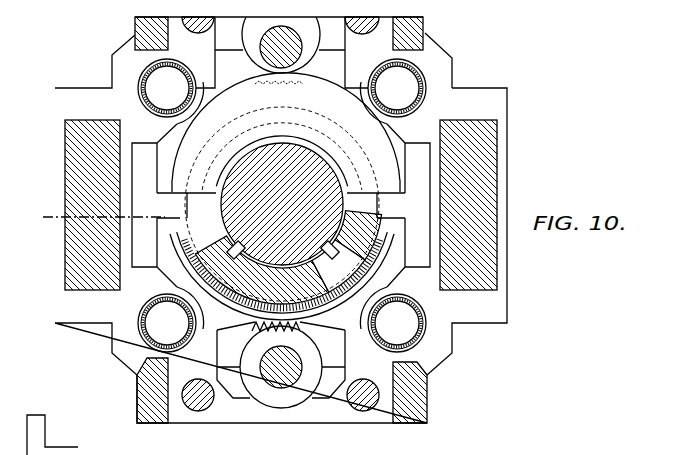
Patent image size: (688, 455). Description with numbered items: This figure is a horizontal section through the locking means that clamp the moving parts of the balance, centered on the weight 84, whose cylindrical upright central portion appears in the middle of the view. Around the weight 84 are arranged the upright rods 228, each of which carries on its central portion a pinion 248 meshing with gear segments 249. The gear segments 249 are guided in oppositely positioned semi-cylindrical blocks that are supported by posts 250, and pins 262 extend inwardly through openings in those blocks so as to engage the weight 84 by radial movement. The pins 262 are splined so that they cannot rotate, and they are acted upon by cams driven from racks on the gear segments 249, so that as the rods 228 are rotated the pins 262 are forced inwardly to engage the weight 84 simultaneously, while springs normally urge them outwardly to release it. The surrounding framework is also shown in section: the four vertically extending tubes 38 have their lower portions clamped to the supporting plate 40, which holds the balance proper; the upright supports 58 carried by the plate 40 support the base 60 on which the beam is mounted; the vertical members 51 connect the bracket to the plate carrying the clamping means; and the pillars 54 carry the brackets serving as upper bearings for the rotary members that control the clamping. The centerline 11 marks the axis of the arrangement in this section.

The axis / shaft centerline 11 is at (472, 403).
The vertically extending tubes 38 is at (140, 77).
The supporting plate 40 is at (497, 322).
The vertical members 51 is at (135, 29).
The pillars 54 is at (197, 408).
The upright supports 58 is at (72, 118).
The base 60 is at (72, 435).
The weight 84 is at (333, 193).
The upright rods 228 is at (267, 53).
The pinion 248 is at (240, 47).
The gear segments 249 is at (255, 330).
The posts 250 is at (143, 147).
The pins 262 is at (255, 141).